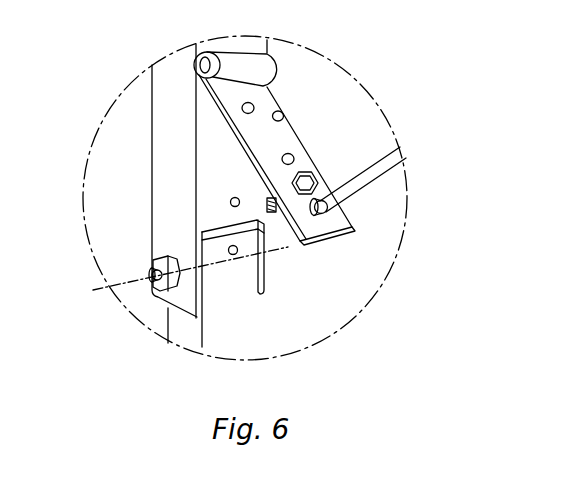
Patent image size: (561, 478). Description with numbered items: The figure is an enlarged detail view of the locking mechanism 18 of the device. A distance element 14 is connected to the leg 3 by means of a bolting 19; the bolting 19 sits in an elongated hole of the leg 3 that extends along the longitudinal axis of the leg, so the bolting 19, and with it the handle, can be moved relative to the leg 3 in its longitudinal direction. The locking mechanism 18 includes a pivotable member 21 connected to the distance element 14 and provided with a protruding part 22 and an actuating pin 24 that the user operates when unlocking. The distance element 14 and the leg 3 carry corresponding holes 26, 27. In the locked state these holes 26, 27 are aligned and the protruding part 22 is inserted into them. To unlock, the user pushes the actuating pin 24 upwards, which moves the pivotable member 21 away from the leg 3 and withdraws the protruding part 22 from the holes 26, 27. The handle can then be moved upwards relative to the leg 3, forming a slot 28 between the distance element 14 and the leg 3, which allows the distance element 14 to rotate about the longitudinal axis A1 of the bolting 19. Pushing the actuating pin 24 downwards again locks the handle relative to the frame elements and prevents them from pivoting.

The leg 3 is at (233, 320).
The distance element 14 is at (170, 137).
The locking mechanism 18 is at (393, 128).
The bolting 19 is at (152, 270).
The pivotable member 21 is at (305, 133).
The protruding part 22 is at (274, 214).
The actuating pin 24 is at (372, 173).
The hole 26 is at (235, 255).
The hole 27 is at (229, 203).
The slot 28 is at (236, 231).
The longitudinal axis of the bolting A1 is at (96, 292).